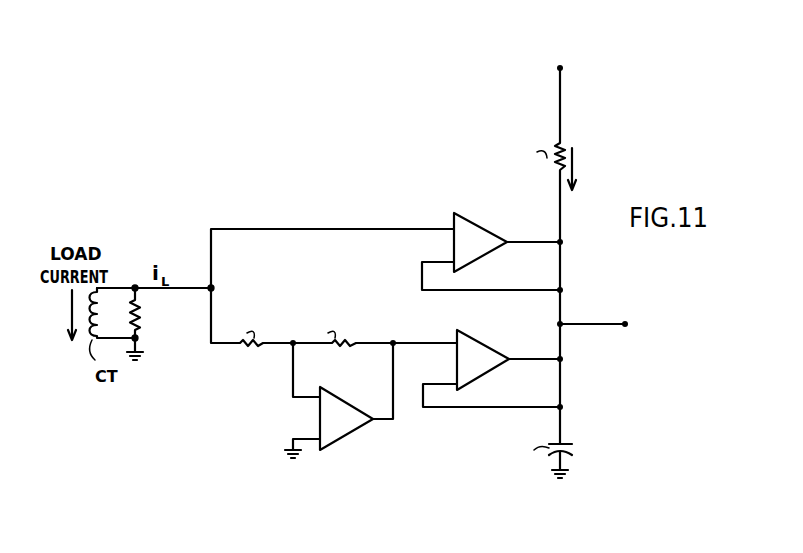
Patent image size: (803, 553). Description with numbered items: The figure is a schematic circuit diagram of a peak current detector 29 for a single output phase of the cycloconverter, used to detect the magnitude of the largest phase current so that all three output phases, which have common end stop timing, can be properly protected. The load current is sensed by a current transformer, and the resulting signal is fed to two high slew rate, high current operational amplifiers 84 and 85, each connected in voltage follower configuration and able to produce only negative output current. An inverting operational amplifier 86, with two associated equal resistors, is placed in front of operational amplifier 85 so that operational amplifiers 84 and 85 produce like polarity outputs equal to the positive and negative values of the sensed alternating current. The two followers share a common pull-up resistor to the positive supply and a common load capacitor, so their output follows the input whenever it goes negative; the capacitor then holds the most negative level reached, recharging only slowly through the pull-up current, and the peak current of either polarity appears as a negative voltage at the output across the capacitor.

The peak current detector 29 is at (398, 455).
The operational amplifier 84 is at (478, 213).
The operational amplifier 85 is at (483, 331).
The inverting operational amplifier 86 is at (345, 389).